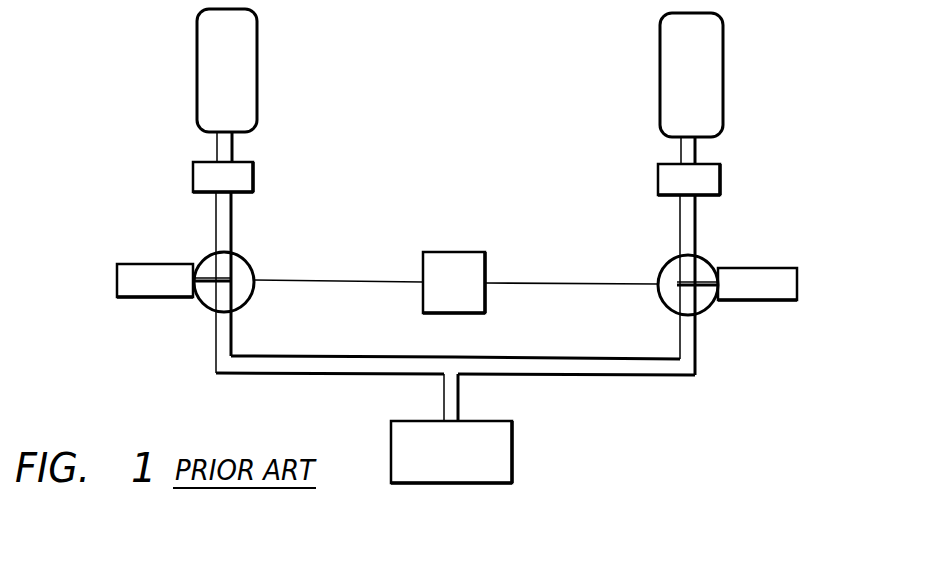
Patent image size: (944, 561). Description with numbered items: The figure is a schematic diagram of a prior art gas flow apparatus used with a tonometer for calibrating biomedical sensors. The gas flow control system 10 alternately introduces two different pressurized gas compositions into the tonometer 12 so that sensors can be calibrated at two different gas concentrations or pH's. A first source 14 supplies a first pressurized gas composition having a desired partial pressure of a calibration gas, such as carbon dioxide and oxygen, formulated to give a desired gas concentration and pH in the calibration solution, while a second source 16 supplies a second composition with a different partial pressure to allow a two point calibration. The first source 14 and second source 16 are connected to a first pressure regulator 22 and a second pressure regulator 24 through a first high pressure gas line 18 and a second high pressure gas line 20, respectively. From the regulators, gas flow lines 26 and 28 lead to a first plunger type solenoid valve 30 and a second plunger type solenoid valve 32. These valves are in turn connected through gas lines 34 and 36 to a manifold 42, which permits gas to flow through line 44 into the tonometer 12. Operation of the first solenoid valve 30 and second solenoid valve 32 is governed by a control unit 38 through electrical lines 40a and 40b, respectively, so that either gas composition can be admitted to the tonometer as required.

The gas flow control system 10 is at (770, 68).
The tonometer 12 is at (513, 458).
The first source 14 is at (197, 77).
The second source 16 is at (660, 72).
The first high pressure gas line 18 is at (217, 153).
The second high pressure gas line 20 is at (688, 157).
The first pressure regulator 22 is at (254, 175).
The second pressure regulator 24 is at (720, 180).
The gas flow line 26 is at (223, 237).
The gas flow line 28 is at (688, 240).
The first plunger type solenoid valve 30 is at (179, 244).
The second plunger type solenoid valve 32 is at (799, 248).
The gas line 34 is at (223, 350).
The gas line 36 is at (687, 353).
The control unit 38 is at (453, 252).
The electrical line 40a is at (347, 283).
The electrical line 40b is at (537, 284).
The manifold 42 is at (447, 368).
The line 44 is at (452, 403).